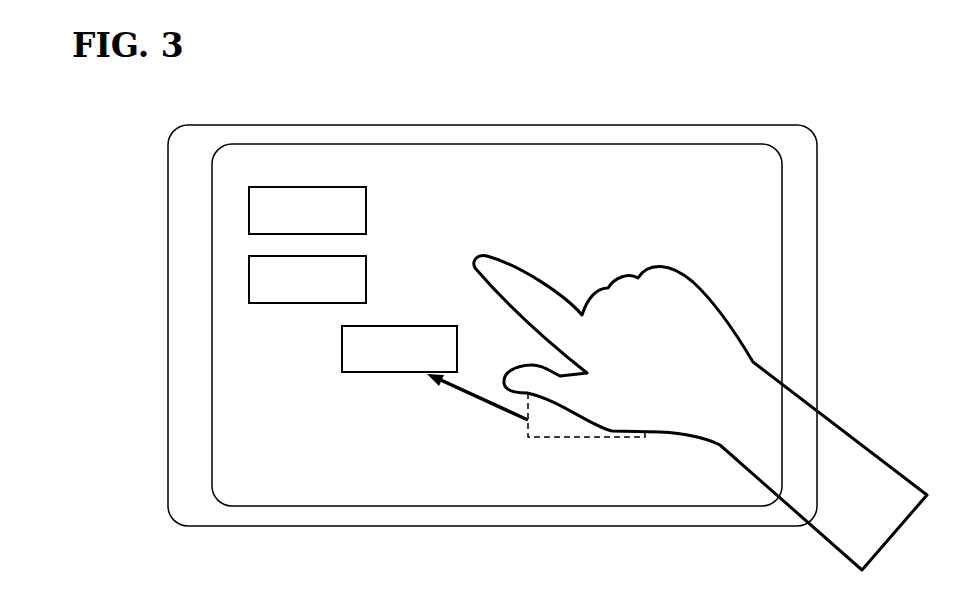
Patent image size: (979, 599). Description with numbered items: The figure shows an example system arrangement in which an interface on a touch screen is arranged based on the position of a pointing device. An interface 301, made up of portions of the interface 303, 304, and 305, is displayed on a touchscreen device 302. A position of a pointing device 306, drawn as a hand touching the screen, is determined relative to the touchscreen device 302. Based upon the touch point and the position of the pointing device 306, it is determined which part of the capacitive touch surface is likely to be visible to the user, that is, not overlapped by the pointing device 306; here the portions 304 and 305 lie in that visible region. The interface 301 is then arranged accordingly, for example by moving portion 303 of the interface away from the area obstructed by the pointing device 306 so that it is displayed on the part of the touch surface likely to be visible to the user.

The interface 301 is at (268, 395).
The touchscreen device 302 is at (168, 253).
The portion of the interface 303 is at (399, 349).
The portion of the interface 304 is at (307, 279).
The portion of the interface 305 is at (307, 210).
The pointing device 306 is at (837, 418).